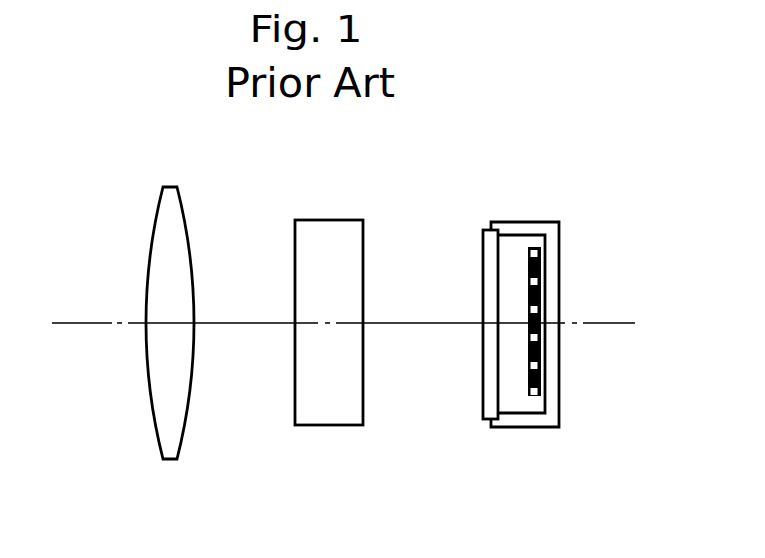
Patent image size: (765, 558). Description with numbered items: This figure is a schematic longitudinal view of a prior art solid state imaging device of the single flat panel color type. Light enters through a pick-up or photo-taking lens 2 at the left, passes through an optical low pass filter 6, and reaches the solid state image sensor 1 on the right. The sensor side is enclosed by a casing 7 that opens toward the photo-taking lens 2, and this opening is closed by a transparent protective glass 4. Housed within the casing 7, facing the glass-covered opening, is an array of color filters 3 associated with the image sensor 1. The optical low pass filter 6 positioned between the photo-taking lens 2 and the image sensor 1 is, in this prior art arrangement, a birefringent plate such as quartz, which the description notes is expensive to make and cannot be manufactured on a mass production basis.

The solid state image sensor 1 is at (545, 292).
The photo-taking lens 2 is at (160, 445).
The array of color filters 3 is at (532, 383).
The transparent protective glass 4 is at (489, 270).
The optical low pass filter 6 is at (322, 225).
The casing 7 is at (533, 227).